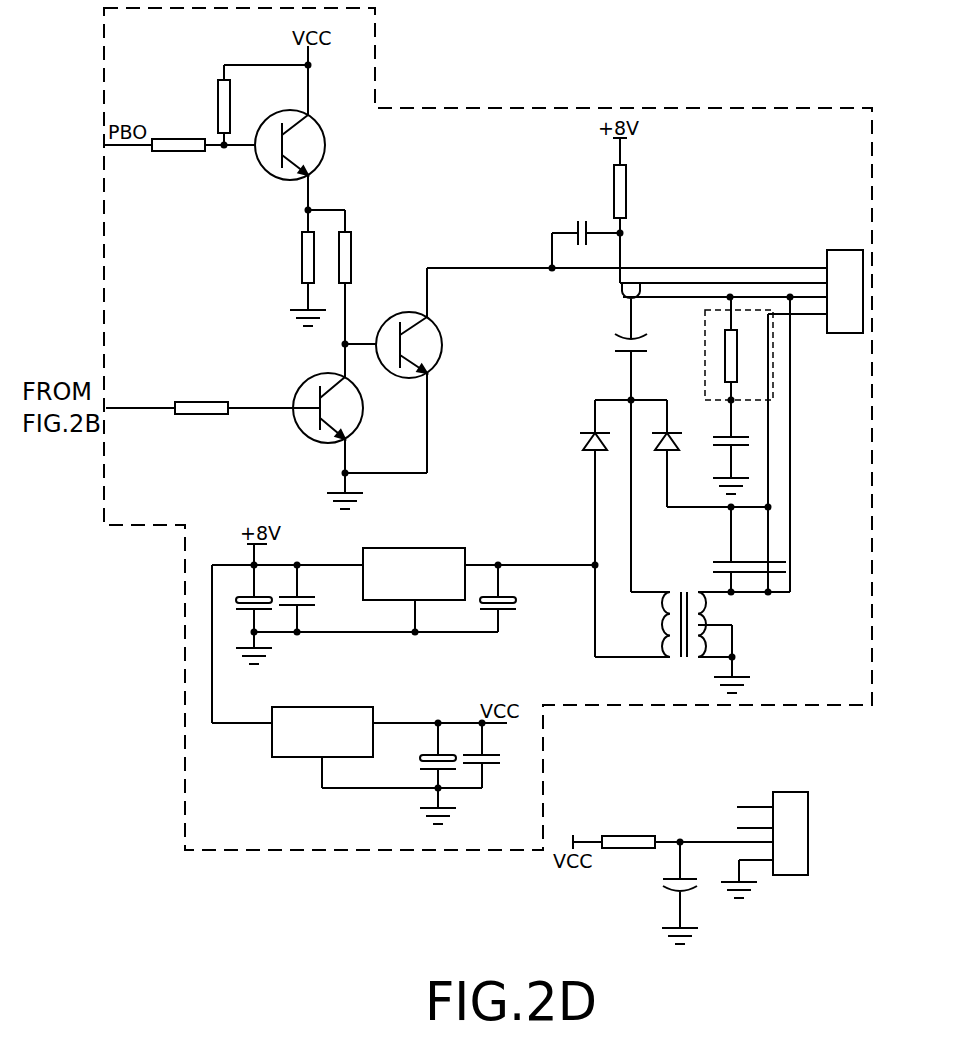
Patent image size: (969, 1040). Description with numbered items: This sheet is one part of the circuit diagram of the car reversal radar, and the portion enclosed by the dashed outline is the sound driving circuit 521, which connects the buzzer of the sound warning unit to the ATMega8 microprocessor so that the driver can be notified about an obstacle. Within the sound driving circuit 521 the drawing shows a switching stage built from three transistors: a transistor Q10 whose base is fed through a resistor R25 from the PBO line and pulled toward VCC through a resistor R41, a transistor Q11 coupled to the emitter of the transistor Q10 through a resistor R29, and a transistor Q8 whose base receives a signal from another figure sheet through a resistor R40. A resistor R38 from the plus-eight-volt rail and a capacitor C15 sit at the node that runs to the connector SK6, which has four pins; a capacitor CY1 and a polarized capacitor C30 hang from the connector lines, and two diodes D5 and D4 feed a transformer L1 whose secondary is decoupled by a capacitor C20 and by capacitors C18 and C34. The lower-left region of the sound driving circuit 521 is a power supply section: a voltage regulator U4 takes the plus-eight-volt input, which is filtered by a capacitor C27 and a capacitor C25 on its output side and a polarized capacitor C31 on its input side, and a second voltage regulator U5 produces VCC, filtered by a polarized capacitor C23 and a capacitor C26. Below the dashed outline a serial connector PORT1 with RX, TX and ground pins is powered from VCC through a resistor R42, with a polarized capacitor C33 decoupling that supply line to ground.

The sound driving circuit 521 is at (770, 703).
The resistor R41 is at (243, 102).
The resistor R25 is at (203, 136).
The transistor Q10 is at (310, 160).
The resistor R29 is at (364, 293).
The transistor Q11 is at (431, 370).
The transistor Q8 is at (341, 441).
The resistor R40 is at (199, 398).
The resistor R38 is at (639, 224).
The capacitor C15 is at (586, 236).
The socket connector SK6 is at (843, 280).
The capacitor CY1 is at (641, 310).
The capacitor C30 is at (647, 358).
The diode D5 is at (575, 528).
The diode D4 is at (675, 453).
The capacitor C20 is at (741, 447).
The capacitor C18 is at (716, 549).
The capacitor C34 is at (760, 559).
The transformer/inductor L1 is at (706, 630).
The voltage regulator U4 is at (456, 579).
The capacitor C27 is at (244, 614).
The capacitor C25 is at (312, 598).
The capacitor C31 is at (520, 598).
The voltage regulator U5 is at (370, 736).
The capacitor C23 is at (416, 773).
The capacitor C26 is at (493, 755).
The resistor R42 is at (687, 831).
The capacitor C33 is at (661, 893).
The serial port connector PORT1 is at (733, 842).